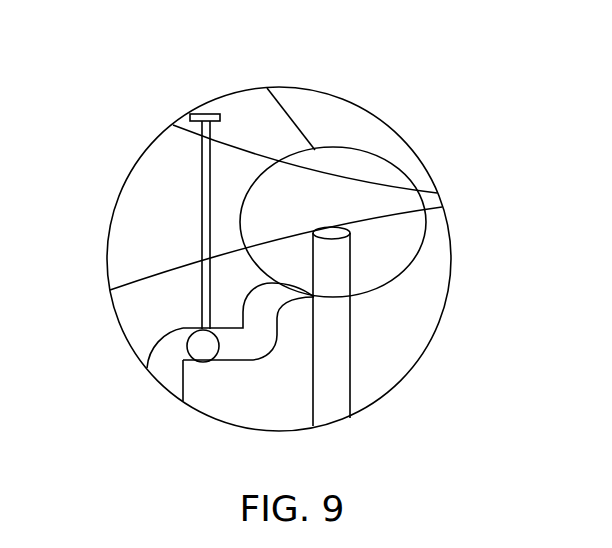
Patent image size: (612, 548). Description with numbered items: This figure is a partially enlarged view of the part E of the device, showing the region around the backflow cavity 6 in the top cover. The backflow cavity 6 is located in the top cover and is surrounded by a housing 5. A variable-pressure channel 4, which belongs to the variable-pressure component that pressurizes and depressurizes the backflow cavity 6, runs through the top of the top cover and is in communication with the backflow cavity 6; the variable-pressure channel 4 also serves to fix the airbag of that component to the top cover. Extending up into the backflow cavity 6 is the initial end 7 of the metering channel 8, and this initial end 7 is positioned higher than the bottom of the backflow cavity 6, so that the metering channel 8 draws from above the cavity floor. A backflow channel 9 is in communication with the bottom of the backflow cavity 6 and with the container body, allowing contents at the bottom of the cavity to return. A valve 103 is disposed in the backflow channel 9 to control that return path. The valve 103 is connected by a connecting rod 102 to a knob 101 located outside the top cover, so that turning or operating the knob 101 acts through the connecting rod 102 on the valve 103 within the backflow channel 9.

The variable-pressure channel 4 is at (267, 132).
The housing 5 is at (383, 155).
The backflow cavity 6 is at (405, 248).
The initial end 7 is at (335, 232).
The metering channel 8 is at (337, 381).
The backflow channel 9 is at (237, 345).
The knob 101 is at (197, 113).
The connecting rod 102 is at (200, 222).
The valve 103 is at (203, 343).
The part E is at (440, 323).